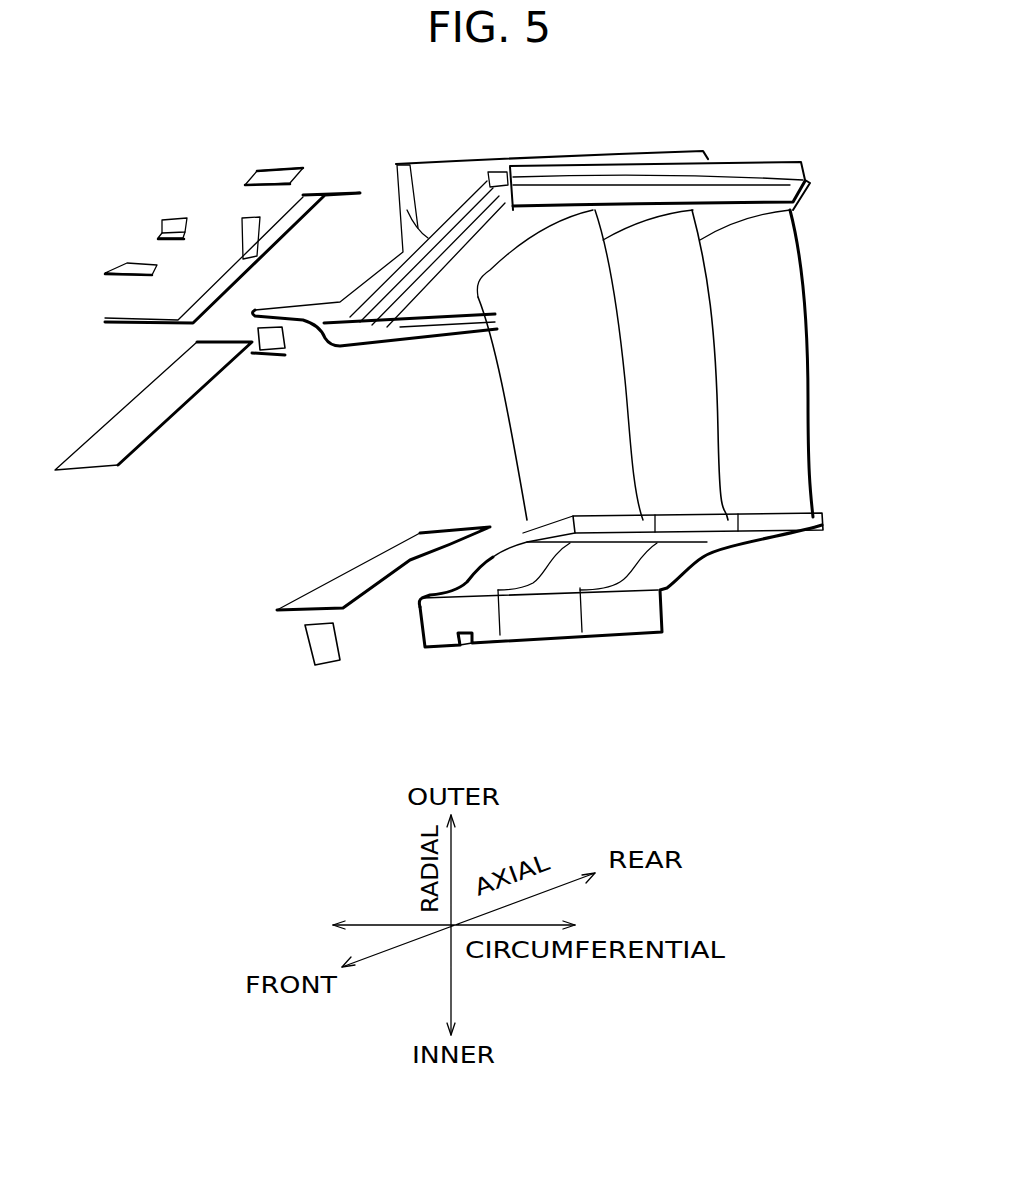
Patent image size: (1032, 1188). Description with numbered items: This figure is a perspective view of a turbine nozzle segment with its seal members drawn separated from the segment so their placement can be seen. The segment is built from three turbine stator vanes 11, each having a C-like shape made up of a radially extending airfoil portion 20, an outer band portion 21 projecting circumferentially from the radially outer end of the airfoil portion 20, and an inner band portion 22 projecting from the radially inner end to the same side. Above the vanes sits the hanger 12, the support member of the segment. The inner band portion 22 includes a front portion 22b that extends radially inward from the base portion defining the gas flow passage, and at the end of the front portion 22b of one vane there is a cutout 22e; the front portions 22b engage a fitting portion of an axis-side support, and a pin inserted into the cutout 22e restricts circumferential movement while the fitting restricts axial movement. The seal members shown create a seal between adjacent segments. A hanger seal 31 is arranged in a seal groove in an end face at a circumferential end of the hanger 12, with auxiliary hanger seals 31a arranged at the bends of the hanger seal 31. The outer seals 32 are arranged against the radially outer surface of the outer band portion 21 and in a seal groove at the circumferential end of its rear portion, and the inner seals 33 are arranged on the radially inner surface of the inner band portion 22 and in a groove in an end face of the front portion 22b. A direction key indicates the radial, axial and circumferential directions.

The turbine stator vane 11 is at (628, 442).
The hanger 12 is at (602, 152).
The airfoil portion 20 is at (538, 417).
The outer band portion 21 is at (425, 300).
The inner band portion 22 is at (620, 598).
The front portion 22b is at (440, 620).
The cutout 22e is at (466, 645).
The hanger seal 31 is at (293, 207).
The auxiliary hanger seal 31a is at (253, 175).
The outer seal 32 is at (220, 375).
The inner seal 33 is at (307, 632).